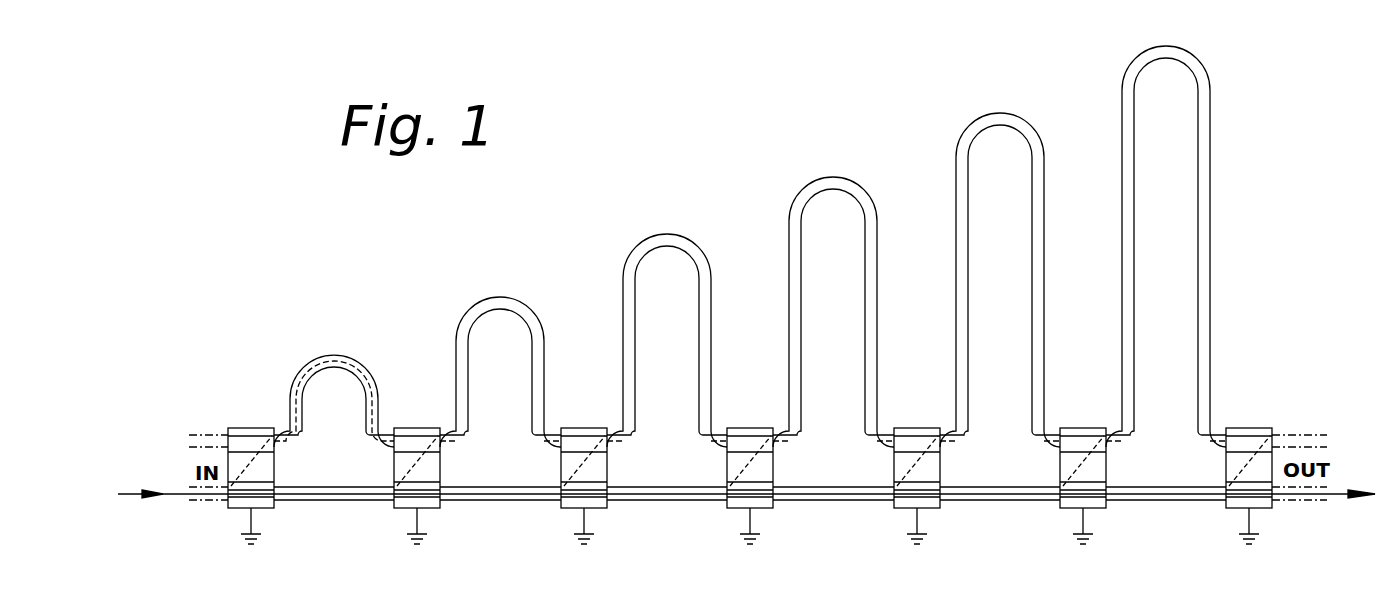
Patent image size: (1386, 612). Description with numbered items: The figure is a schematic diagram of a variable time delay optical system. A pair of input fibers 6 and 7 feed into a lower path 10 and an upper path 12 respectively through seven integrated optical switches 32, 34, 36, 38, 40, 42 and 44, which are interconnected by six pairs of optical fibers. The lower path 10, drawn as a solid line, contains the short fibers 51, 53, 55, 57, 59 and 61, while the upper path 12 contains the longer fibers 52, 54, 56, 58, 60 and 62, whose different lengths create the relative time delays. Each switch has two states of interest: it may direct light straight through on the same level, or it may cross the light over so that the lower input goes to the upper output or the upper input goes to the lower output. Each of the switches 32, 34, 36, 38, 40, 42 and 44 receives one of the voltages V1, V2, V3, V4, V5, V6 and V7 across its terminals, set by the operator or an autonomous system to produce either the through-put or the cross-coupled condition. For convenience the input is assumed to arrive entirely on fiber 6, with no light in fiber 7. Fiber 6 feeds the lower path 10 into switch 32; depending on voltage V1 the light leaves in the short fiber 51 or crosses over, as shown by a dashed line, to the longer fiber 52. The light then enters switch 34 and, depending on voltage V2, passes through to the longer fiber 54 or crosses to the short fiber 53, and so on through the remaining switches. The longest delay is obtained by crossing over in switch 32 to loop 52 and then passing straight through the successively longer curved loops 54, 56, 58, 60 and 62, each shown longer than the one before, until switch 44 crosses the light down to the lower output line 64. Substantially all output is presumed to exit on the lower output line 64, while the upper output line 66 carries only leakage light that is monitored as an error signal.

The input fiber 6 is at (208, 502).
The input fiber 7 is at (207, 448).
The lower path 10 is at (340, 523).
The upper path 12 is at (340, 330).
The integrated optical switch 32 is at (258, 508).
The integrated optical switch 34 is at (424, 508).
The integrated optical switch 36 is at (591, 508).
The integrated optical switch 38 is at (757, 508).
The integrated optical switch 40 is at (924, 508).
The integrated optical switch 42 is at (1090, 508).
The integrated optical switch 44 is at (1256, 508).
The short fiber 51 is at (330, 486).
The curved loop 52 is at (348, 407).
The short fiber 53 is at (496, 486).
The curved loop 54 is at (514, 349).
The short fiber 55 is at (663, 486).
The curved loop 56 is at (681, 286).
The short fiber 57 is at (829, 486).
The curved loop 58 is at (847, 229).
The short fiber 59 is at (996, 486).
The curved loop 60 is at (1014, 165).
The short fiber 61 is at (1162, 486).
The curved loop 62 is at (1180, 98).
The lower output line 64 is at (1300, 503).
The upper output line 66 is at (1297, 433).
The voltage V1 is at (252, 428).
The voltage V2 is at (418, 428).
The voltage V3 is at (585, 428).
The voltage V4 is at (751, 428).
The voltage V5 is at (918, 428).
The voltage V6 is at (1084, 428).
The voltage V7 is at (1250, 428).